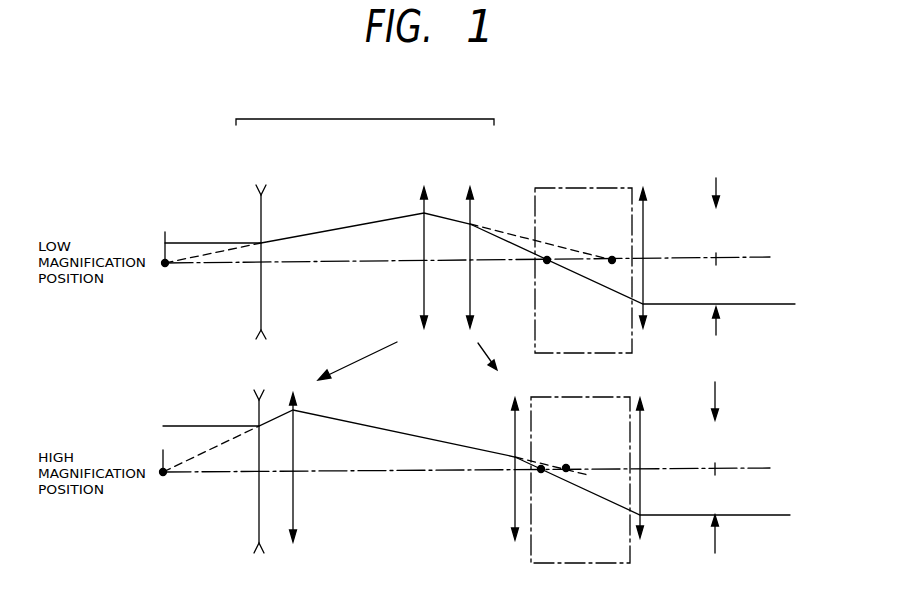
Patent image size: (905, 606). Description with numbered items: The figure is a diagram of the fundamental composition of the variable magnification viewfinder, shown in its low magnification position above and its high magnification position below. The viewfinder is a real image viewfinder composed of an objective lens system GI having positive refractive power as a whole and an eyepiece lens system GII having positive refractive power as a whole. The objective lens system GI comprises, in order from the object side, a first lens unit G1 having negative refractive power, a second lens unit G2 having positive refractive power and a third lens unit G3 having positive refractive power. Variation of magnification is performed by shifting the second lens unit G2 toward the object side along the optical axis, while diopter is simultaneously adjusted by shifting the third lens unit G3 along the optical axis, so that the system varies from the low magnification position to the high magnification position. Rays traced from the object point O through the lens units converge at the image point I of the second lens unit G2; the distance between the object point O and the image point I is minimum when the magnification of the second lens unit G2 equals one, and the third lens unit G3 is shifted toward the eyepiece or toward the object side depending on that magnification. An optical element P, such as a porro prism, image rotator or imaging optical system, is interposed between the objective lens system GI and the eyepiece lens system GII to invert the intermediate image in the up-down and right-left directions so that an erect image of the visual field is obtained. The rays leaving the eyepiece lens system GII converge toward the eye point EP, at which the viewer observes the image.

The object point O is at (165, 367).
The first lens unit G1 is at (256, 353).
The second lens unit G2 is at (357, 347).
The third lens unit G3 is at (489, 346).
The objective lens system GI is at (365, 107).
The eyepiece lens system GII is at (643, 327).
The optical element P is at (581, 364).
The image point I is at (589, 349).
The eye point / exit pupil EP is at (727, 365).